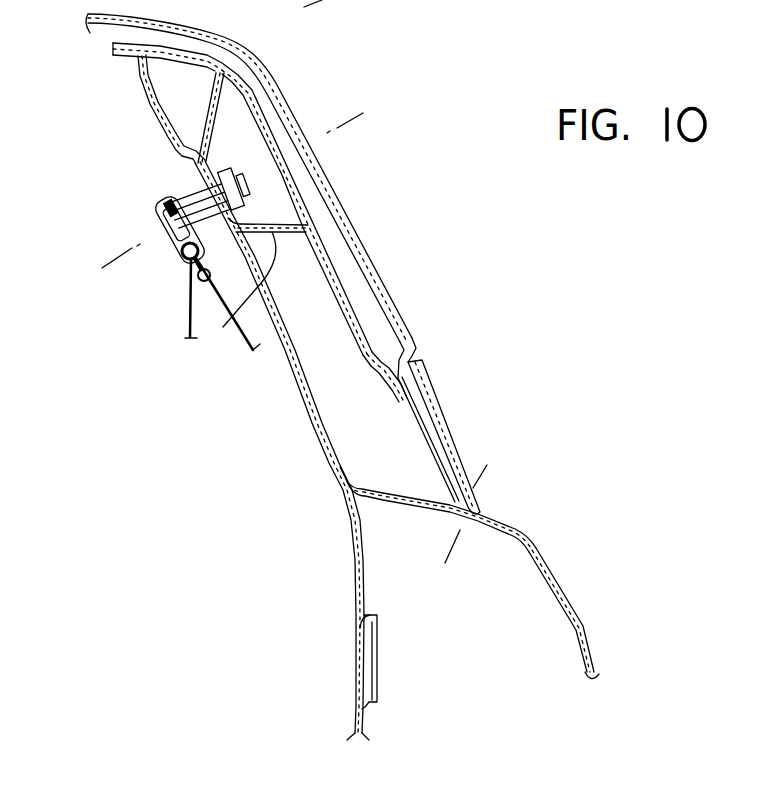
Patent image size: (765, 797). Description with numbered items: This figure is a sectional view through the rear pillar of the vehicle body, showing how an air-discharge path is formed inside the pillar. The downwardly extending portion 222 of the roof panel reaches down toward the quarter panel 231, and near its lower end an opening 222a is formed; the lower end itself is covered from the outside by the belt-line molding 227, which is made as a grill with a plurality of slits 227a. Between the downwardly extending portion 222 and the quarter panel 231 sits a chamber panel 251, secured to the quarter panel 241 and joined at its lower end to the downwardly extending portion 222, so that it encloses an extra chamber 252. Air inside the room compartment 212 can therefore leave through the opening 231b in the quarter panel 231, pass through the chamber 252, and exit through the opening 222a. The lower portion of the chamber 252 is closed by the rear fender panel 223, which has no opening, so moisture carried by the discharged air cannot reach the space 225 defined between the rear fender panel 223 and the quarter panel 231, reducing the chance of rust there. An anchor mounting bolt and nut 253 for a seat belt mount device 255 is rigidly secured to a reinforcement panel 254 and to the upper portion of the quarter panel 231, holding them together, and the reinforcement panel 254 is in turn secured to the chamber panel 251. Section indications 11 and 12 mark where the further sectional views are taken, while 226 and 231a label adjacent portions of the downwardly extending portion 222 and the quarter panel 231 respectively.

The section line XI-XI 11 is at (489, 468).
The section line XII-XII 12 is at (364, 116).
The room compartment 212 is at (103, 340).
The downwardly extending portion 222 is at (382, 280).
The opening 222a is at (442, 474).
The rear fender panel 223 is at (579, 628).
The space 225 is at (487, 663).
The bead portion 226 is at (383, 324).
The belt-line molding 227 is at (423, 373).
The slits 227a is at (421, 374).
The quarter panel 231 is at (304, 378).
The lower end of pillar inner panel 231a is at (363, 618).
The opening 231b is at (153, 113).
The quarter panel 241 is at (388, 506).
The chamber panel 251 is at (262, 96).
The extra chamber 252 is at (356, 373).
The anchor mounting bolt and nut 253 is at (162, 200).
The reinforcement panel 254 is at (221, 316).
The seat belt mount device 255 is at (191, 322).